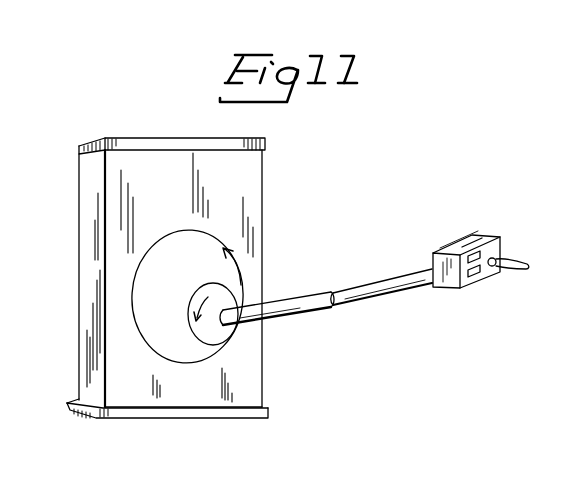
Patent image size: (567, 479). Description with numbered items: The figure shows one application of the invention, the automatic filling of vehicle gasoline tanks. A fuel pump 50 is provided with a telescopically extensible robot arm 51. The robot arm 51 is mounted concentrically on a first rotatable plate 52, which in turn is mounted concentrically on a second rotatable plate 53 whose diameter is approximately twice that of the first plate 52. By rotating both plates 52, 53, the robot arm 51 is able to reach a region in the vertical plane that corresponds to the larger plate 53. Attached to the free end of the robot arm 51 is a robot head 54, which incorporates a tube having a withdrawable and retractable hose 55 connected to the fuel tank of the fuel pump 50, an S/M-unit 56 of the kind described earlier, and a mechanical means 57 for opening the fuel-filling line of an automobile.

The fuel pump 50 is at (253, 176).
The robot arm 51 is at (315, 310).
The first rotatable plate 52 is at (216, 340).
The second rotatable plate 53 is at (173, 295).
The robot head 54 is at (433, 253).
The hose 55 is at (522, 262).
The S/M-unit 56 is at (472, 244).
The mechanical means 57 is at (476, 272).